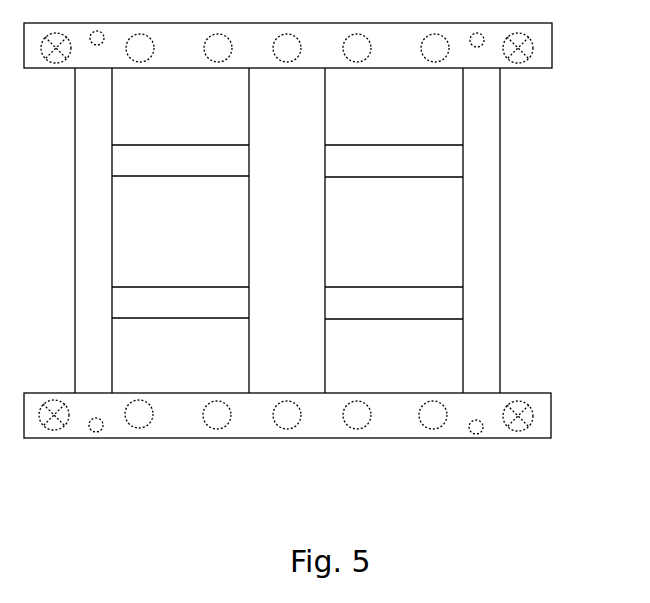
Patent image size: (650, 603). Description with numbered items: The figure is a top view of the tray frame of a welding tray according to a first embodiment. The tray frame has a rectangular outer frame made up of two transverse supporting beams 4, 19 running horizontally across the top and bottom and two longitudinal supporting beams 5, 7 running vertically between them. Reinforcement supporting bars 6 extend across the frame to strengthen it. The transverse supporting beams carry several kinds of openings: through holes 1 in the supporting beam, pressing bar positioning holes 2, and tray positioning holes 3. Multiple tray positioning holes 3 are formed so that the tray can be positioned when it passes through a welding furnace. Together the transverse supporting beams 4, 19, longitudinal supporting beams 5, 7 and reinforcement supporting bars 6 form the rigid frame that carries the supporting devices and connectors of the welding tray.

The through hole in a supporting beam 1 is at (530, 414).
The pressing bar positioning hole 2 is at (476, 433).
The tray positioning hole 3 is at (287, 418).
The transverse supporting beam 4 is at (400, 60).
The longitudinal supporting beam 5 is at (300, 219).
The reinforcement supporting bar 6 is at (403, 298).
The longitudinal supporting beam 7 is at (498, 166).
The transverse supporting beam 19 is at (545, 423).